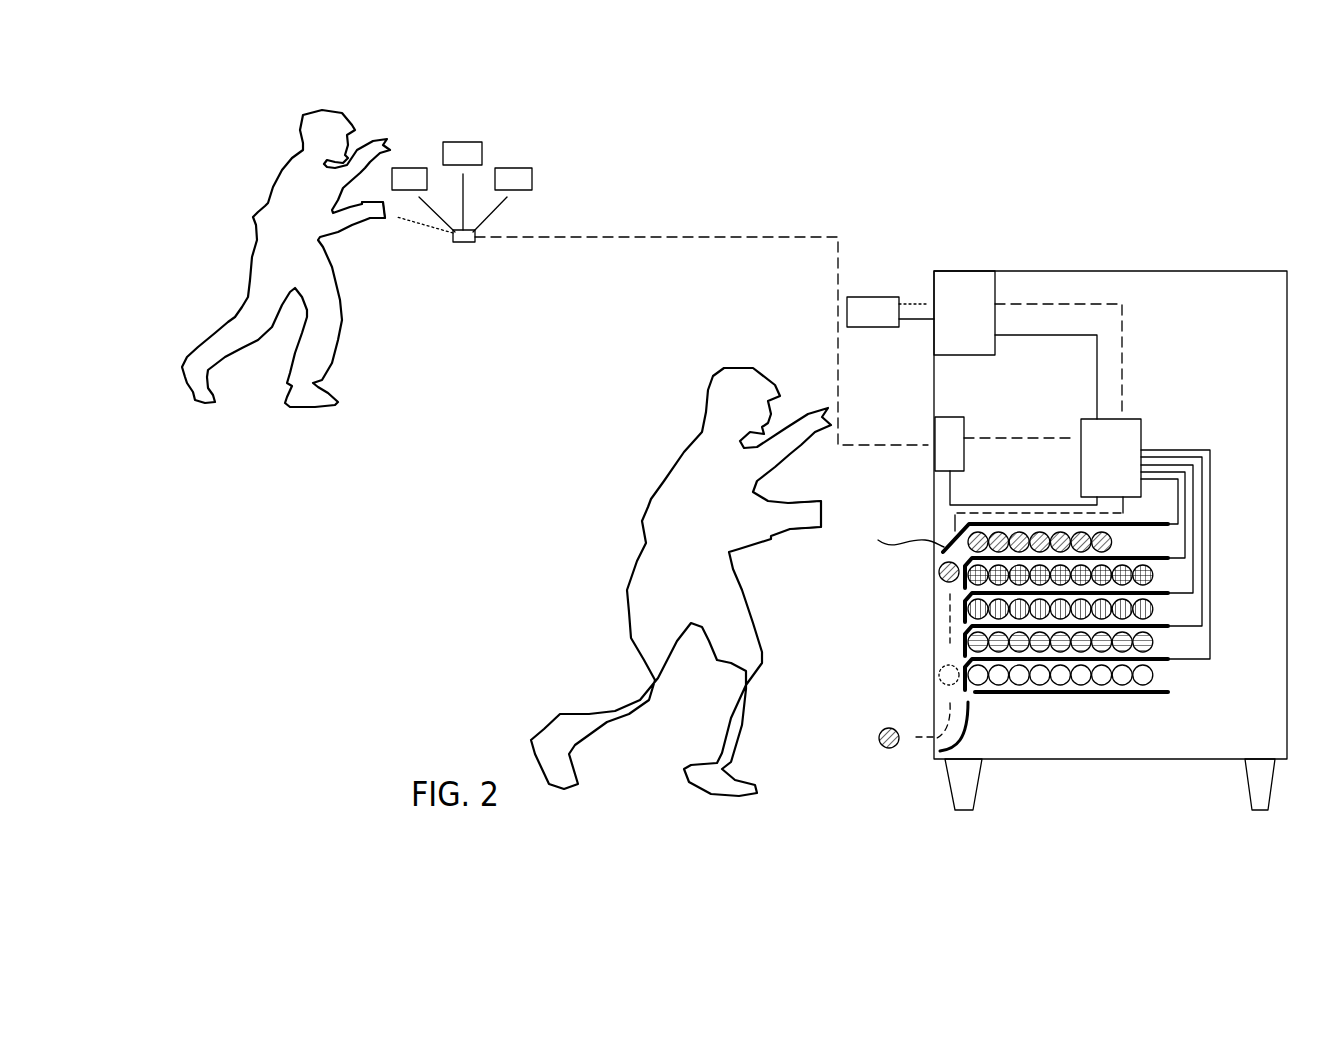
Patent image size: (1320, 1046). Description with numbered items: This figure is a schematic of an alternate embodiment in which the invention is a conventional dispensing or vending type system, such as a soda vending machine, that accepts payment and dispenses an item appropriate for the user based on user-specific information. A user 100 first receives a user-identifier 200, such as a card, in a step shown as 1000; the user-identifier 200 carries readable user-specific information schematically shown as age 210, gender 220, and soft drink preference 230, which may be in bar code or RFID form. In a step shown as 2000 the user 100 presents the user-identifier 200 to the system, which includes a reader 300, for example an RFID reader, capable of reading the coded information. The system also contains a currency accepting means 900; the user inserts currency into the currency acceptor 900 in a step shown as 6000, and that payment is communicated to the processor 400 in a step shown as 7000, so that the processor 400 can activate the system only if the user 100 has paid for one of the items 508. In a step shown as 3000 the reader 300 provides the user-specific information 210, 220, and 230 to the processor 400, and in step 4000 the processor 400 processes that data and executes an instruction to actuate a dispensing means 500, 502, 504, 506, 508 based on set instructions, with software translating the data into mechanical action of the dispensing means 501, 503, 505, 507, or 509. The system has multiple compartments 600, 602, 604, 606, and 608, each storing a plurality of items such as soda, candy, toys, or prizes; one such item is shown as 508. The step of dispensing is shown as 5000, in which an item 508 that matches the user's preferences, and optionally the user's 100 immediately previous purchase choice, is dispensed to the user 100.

The user 100 is at (255, 214).
The user-identifier 200 is at (468, 242).
The age 210 is at (988, 440).
The gender 220 is at (1018, 439).
The soft drink preference 230 is at (1032, 440).
The step of receiving a user identifier 1000 is at (419, 233).
The step of presenting the user-identifier 2000 is at (784, 218).
The reader 300 is at (952, 427).
The step of sending user-specific data to the processor 3000 is at (1003, 416).
The processor 400 is at (1080, 539).
The step of processing user-specific data 4000 is at (941, 510).
The currency accepting means 900 is at (1028, 345).
The step of inserting currency 6000 is at (908, 276).
The step of communicating payment to the processor 7000 is at (1077, 286).
The dispensing means 500 is at (1167, 692).
The dispensing means 501 is at (944, 690).
The dispensing means 502 is at (1163, 673).
The dispensing means 503 is at (945, 647).
The dispensing means 504 is at (1165, 640).
The dispensing means 505 is at (945, 612).
The dispensing means 506 is at (1160, 586).
The dispensing means 507 is at (945, 585).
The item 508 is at (1125, 546).
The dispensing means 509 is at (894, 533).
The compartment 600 is at (1165, 680).
The compartment 602 is at (1165, 637).
The compartment 604 is at (1160, 607).
The compartment 606 is at (1160, 573).
The compartment 608 is at (1125, 540).
The step of dispensing 5000 is at (970, 728).